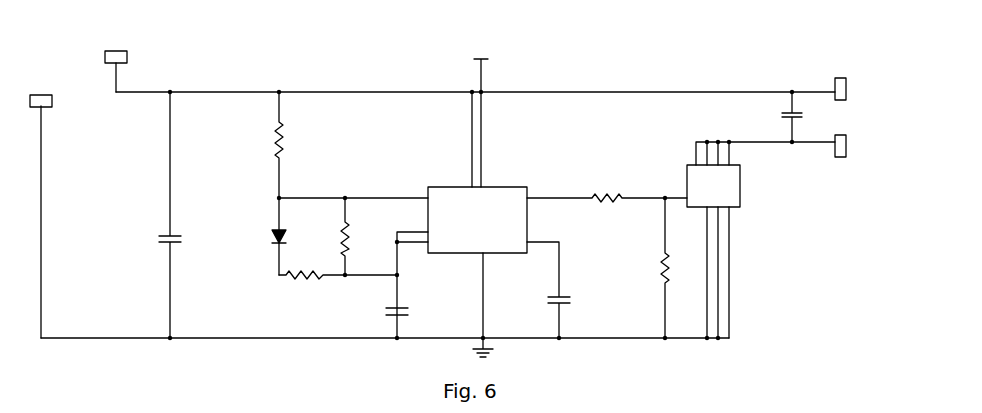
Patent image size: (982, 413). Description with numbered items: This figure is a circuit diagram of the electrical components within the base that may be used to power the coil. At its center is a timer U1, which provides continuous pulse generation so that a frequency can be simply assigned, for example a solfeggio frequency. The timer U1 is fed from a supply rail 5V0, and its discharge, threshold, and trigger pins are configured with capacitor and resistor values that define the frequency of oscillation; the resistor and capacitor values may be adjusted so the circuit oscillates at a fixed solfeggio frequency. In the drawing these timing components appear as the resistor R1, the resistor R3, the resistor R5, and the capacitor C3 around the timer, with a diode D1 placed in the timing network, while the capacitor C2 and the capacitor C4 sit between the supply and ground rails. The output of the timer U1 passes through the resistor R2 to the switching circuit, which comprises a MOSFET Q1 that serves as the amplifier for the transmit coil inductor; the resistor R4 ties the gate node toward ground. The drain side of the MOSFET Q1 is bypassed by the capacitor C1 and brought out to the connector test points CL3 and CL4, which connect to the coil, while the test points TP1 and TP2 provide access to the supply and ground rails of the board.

The NA555DR timer IC U1 is at (490, 215).
The resistor 1K R1 is at (292, 145).
The resistor 0R R2 is at (607, 200).
The resistor 10K R3 is at (362, 236).
The resistor 10K R4 is at (670, 268).
The resistor 10R R5 is at (312, 280).
The capacitor C1 is at (776, 117).
The capacitor 10uF C2 is at (158, 215).
The capacitor 500pF C3 is at (424, 310).
The capacitor 0.1uF C4 is at (573, 290).
The diode 1N4148 D1 is at (252, 236).
The transistor array DMT10H025SSS-13 Q1 is at (771, 240).
The test point CL3 is at (880, 85).
The test point CL4 is at (880, 140).
The test point TP1 is at (161, 59).
The test point TP2 is at (81, 107).
The 5V supply 5V0 is at (484, 113).